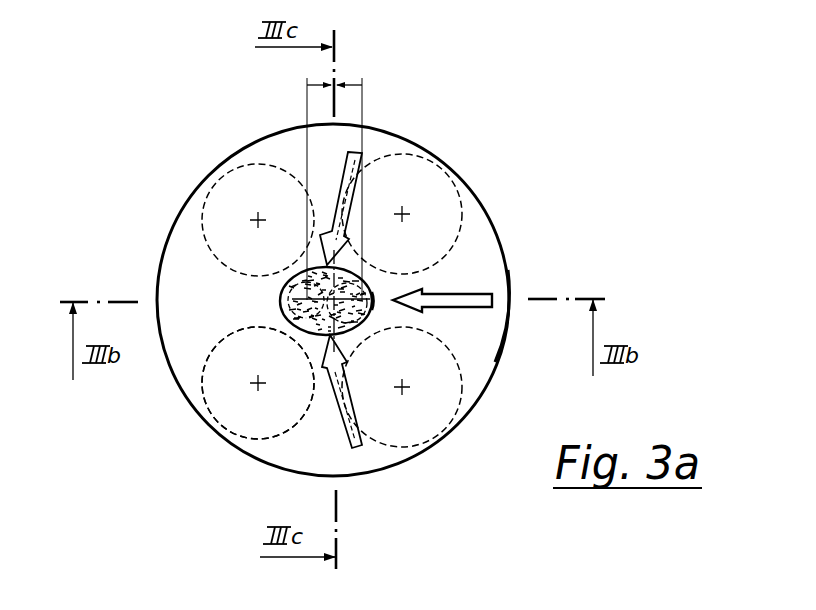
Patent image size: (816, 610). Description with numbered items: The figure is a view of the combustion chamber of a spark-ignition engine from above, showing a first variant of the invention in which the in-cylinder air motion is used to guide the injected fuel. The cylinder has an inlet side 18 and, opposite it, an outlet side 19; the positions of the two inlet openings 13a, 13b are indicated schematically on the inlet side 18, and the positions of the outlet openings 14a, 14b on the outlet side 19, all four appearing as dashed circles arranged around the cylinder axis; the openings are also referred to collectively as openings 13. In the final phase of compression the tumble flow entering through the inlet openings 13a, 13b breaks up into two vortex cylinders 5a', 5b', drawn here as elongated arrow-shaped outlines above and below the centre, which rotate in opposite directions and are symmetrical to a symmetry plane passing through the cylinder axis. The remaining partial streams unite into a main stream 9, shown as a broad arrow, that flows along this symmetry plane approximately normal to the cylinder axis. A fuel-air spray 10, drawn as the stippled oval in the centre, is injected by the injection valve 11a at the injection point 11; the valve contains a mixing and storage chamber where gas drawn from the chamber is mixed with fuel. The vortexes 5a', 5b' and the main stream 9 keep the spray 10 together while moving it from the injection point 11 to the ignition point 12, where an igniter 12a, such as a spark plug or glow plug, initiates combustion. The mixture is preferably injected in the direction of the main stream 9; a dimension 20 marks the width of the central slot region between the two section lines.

The vortex cylinder 5a' is at (380, 168).
The vortex cylinder 5b' is at (361, 425).
The main stream 9 is at (473, 297).
The fuel-air spray 10 is at (282, 312).
The injection point 11 is at (373, 303).
The injection valve 11a is at (382, 287).
The ignition point 12 is at (307, 300).
The igniter 12a is at (298, 287).
The bores 13 is at (229, 396).
The inlet opening 13a is at (437, 190).
The inlet opening 13b is at (452, 408).
The outlet opening 14a is at (239, 172).
The outlet opening 14b is at (237, 413).
The inlet side 18 is at (492, 347).
The outlet side 19 is at (188, 240).
The slot width dimension 20 is at (338, 82).